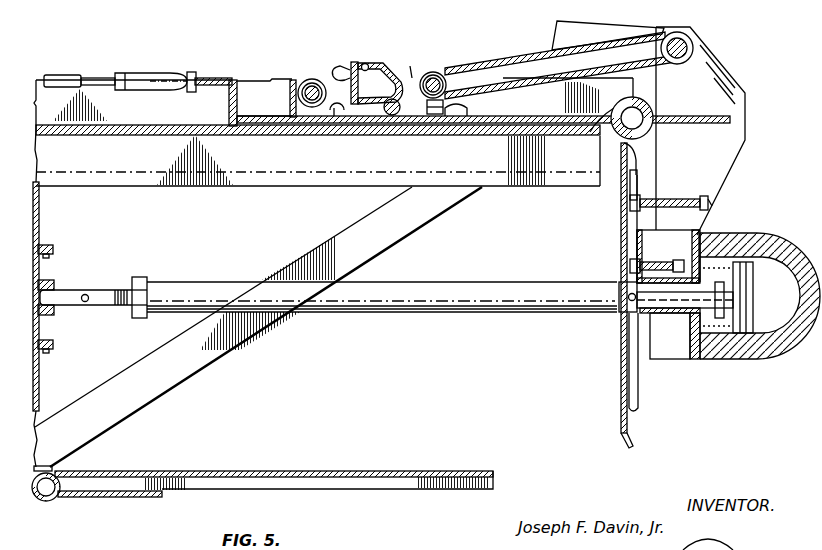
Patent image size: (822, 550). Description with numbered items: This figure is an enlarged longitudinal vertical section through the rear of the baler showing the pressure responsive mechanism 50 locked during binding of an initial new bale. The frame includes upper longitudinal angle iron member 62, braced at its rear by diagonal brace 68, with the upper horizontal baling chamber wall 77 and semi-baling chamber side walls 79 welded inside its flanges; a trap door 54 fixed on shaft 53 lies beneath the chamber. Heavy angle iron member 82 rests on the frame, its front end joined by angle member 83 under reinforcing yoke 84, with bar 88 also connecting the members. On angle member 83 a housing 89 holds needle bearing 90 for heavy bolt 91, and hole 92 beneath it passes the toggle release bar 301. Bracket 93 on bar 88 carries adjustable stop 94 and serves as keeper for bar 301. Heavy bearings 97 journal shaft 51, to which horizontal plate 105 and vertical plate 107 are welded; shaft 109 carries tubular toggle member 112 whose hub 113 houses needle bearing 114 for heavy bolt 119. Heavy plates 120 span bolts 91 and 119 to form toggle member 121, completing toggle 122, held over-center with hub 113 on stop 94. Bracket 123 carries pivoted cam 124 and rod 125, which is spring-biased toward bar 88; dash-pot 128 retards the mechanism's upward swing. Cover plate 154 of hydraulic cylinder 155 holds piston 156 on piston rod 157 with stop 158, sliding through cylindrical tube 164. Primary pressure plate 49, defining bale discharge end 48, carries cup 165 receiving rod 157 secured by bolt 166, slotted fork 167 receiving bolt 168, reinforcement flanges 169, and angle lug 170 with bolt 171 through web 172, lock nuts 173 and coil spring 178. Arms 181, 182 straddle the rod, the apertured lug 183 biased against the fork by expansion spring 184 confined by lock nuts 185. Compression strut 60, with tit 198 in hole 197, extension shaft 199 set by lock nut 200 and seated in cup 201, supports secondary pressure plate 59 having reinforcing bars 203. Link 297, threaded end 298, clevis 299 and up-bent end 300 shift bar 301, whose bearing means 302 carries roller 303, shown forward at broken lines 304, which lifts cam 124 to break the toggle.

The bale discharge end 48 is at (618, 410).
The primary pressure plate 49 is at (621, 360).
The pressure responsive mechanism 50 is at (755, 90).
The shaft 51 is at (650, 111).
The shaft 53 is at (55, 472).
The trap door 54 is at (322, 482).
The secondary pressure plate 59 is at (40, 220).
The compression strut 60 is at (338, 314).
The longitudinal angle iron member 62 is at (116, 129).
The diagonal brace 68 is at (380, 240).
The upper horizontal baling chamber wall 77 is at (218, 126).
The semi-baling chamber side wall 79 is at (510, 188).
The heavy angle iron member 82 is at (558, 122).
The angle member 83 is at (296, 188).
The reinforcing yoke 84 is at (268, 80).
The bar 88 is at (430, 116).
The housing 89 is at (318, 79).
The needle bearing 90 is at (305, 84).
The heavy bolt 91 is at (281, 97).
The hole 92 is at (290, 123).
The inverted U-shaped bracket 93 is at (468, 118).
The adjustable stop 94 is at (480, 100).
The heavy bearing 97 is at (615, 108).
The horizontal plate 105 is at (735, 118).
The vertical plate 107 is at (745, 138).
The shaft 109 is at (683, 43).
The tubular toggle member 112 is at (534, 44).
The hub 113 is at (450, 72).
The needle bearing 114 is at (436, 71).
The heavy bolt 119 is at (520, 63).
The heavy plate 120 is at (413, 62).
The toggle member 121 is at (322, 68).
The toggle 122 is at (394, 62).
The bracket 123 is at (370, 62).
The cam 124 is at (346, 188).
The rod 125 is at (360, 60).
The dash-pot 128 is at (613, 29).
The cover plate 154 is at (702, 236).
The hydraulic cylinder 155 is at (752, 247).
The piston 156 is at (744, 296).
The piston rod 157 is at (683, 318).
The stop 158 is at (712, 342).
The cylindrical tube 164 is at (640, 381).
The cylindrical cup 165 is at (619, 316).
The bolt 166 is at (626, 290).
The slotted fork 167 is at (640, 251).
The bolt 168 is at (660, 258).
The reinforcement flange 169 is at (633, 172).
The angle lug 170 is at (621, 194).
The bolt 171 is at (645, 198).
The web 172 is at (708, 193).
The lock nuts 173 is at (710, 204).
The coil spring 178 is at (656, 198).
The arm 181 is at (641, 285).
The arm 182 is at (627, 325).
The apertured lug 183 is at (641, 268).
The expansion spring 184 is at (678, 260).
The lock nuts 185 is at (710, 252).
The hole 197 is at (619, 300).
The tit 198 is at (619, 296).
The adjustable threaded extension shaft 199 is at (112, 290).
The lock nut 200 is at (147, 278).
The cup 201 is at (55, 281).
The horizontal reinforcing bars 203 is at (53, 250).
The link 297 is at (53, 76).
The threaded rear end 298 is at (92, 78).
The adjustable clevis 299 is at (131, 74).
The up-bent end 300 is at (205, 73).
The toggle release bar 301 is at (263, 123).
The bearing means 302 is at (388, 122).
The roller 303 is at (413, 188).
The broken lines 304 is at (340, 118).